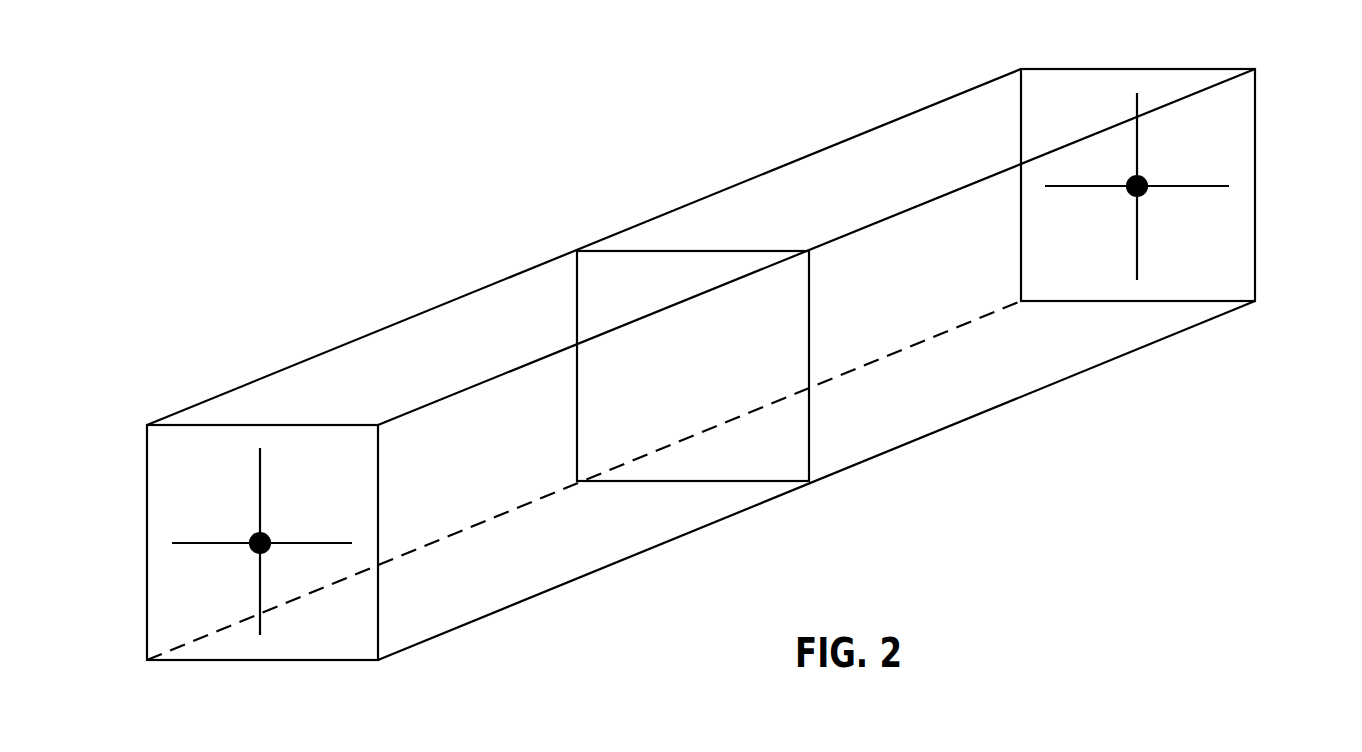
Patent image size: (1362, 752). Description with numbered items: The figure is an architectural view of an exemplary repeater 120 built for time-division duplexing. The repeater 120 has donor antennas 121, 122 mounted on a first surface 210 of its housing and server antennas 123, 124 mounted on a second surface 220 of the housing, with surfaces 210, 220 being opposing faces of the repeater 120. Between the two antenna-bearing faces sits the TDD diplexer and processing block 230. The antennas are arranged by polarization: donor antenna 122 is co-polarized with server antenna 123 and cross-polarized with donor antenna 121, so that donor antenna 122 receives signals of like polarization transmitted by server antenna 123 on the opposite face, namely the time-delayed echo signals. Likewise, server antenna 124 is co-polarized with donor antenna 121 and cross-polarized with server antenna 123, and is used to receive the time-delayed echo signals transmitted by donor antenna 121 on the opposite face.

The repeater 120 is at (445, 302).
The donor antenna 121 is at (188, 543).
The donor antenna 122 is at (260, 617).
The server antenna 123 is at (1137, 257).
The server antenna 124 is at (1207, 185).
The surface 210 is at (378, 618).
The surface 220 is at (1255, 240).
The TDD diplexer and processing block 230 is at (809, 445).